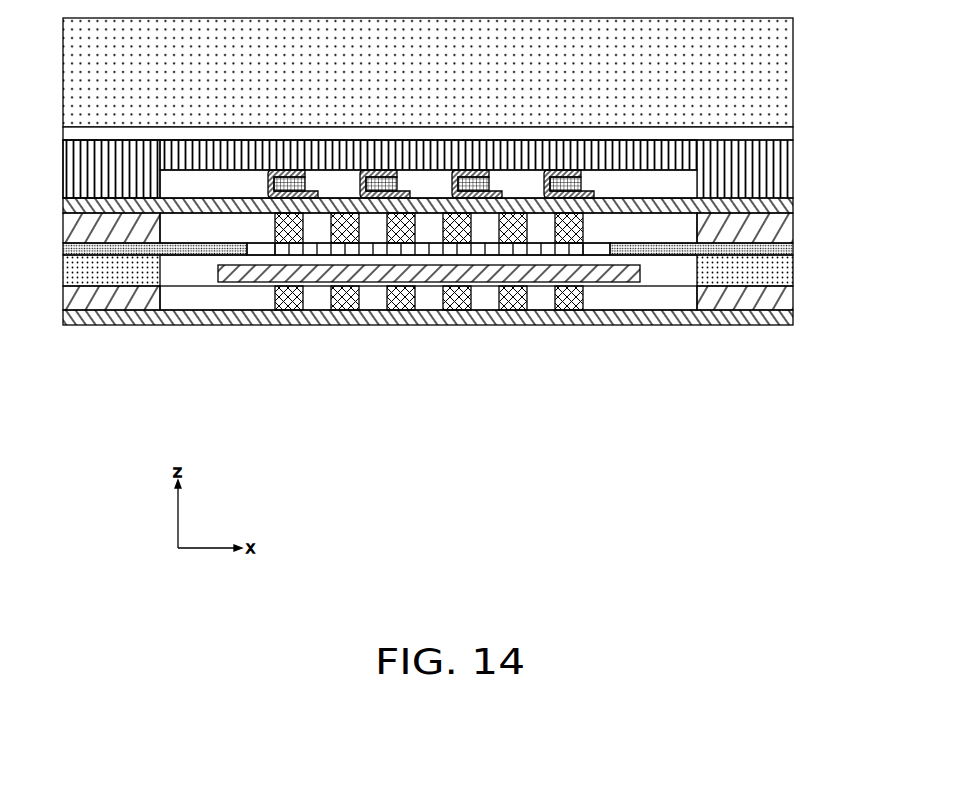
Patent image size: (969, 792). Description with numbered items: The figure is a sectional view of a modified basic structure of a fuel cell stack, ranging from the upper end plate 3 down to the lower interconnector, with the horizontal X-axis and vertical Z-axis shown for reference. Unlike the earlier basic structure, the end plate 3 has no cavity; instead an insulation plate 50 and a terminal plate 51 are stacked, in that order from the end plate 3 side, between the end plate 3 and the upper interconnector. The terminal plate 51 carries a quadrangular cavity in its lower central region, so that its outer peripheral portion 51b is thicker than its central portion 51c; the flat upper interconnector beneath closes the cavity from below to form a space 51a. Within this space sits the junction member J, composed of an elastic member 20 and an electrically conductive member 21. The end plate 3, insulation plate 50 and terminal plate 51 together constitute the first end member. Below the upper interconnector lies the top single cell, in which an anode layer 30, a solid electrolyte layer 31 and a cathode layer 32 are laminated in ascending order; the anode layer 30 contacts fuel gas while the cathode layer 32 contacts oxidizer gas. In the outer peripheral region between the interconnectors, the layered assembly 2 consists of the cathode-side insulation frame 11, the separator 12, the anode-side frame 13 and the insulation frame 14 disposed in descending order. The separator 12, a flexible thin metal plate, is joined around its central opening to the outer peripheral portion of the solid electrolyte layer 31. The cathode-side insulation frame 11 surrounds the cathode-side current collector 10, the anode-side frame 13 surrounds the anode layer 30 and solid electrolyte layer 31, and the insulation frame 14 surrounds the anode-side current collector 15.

The upper end plate 3 is at (793, 72).
The insulation plate 50 is at (793, 131).
The terminal plate 51 is at (793, 167).
The space 51a is at (645, 183).
The outer peripheral portion 51b is at (118, 167).
The central portion 51c is at (248, 153).
The junction member J is at (431, 113).
The elastic member 20 is at (560, 170).
The electrically conductive member 21 is at (572, 172).
The wiring substrate 2 is at (442, 339).
The cathode-side insulation frame 11 is at (793, 226).
The separator 12 is at (793, 246).
The anode-side frame 13 is at (793, 266).
The insulation frame 14 is at (793, 296).
The cathode-side current collector 10 is at (275, 222).
The anode-side current collector 15 is at (275, 292).
The cathode layer 32 is at (546, 251).
The solid electrolyte layer 31 is at (595, 255).
The anode layer 30 is at (620, 282).